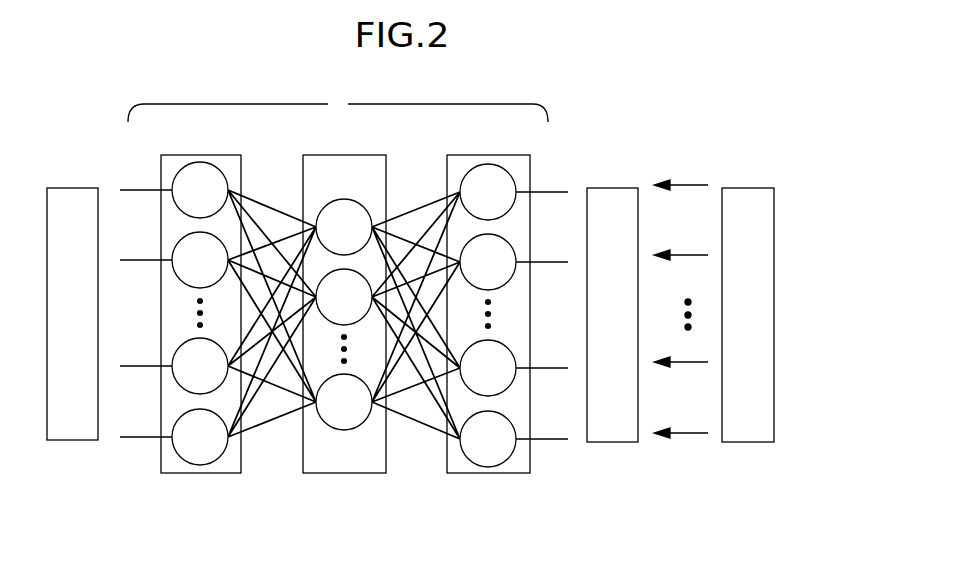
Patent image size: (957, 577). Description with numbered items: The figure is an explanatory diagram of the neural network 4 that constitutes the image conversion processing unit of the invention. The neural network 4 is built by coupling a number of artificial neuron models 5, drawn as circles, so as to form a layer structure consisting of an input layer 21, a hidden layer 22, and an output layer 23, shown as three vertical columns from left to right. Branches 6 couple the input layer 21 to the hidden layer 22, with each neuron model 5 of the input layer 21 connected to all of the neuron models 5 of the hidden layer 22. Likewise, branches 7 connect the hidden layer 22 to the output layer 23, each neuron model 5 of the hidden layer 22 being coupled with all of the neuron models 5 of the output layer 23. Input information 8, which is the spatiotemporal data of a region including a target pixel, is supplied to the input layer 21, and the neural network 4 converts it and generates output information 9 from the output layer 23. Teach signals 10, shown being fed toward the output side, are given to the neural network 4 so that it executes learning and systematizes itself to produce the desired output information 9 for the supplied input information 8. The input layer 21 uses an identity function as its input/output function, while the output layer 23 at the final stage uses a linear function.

The neural network 4 is at (348, 104).
The artificial neuron model 5 is at (176, 182).
The branches 6 is at (258, 200).
The branches 7 is at (402, 208).
The input information 8 is at (72, 188).
The output information 9 is at (612, 188).
The teach signals 10 is at (747, 188).
The input layer 21 is at (217, 474).
The hidden layer 22 is at (358, 473).
The output layer 23 is at (505, 473).